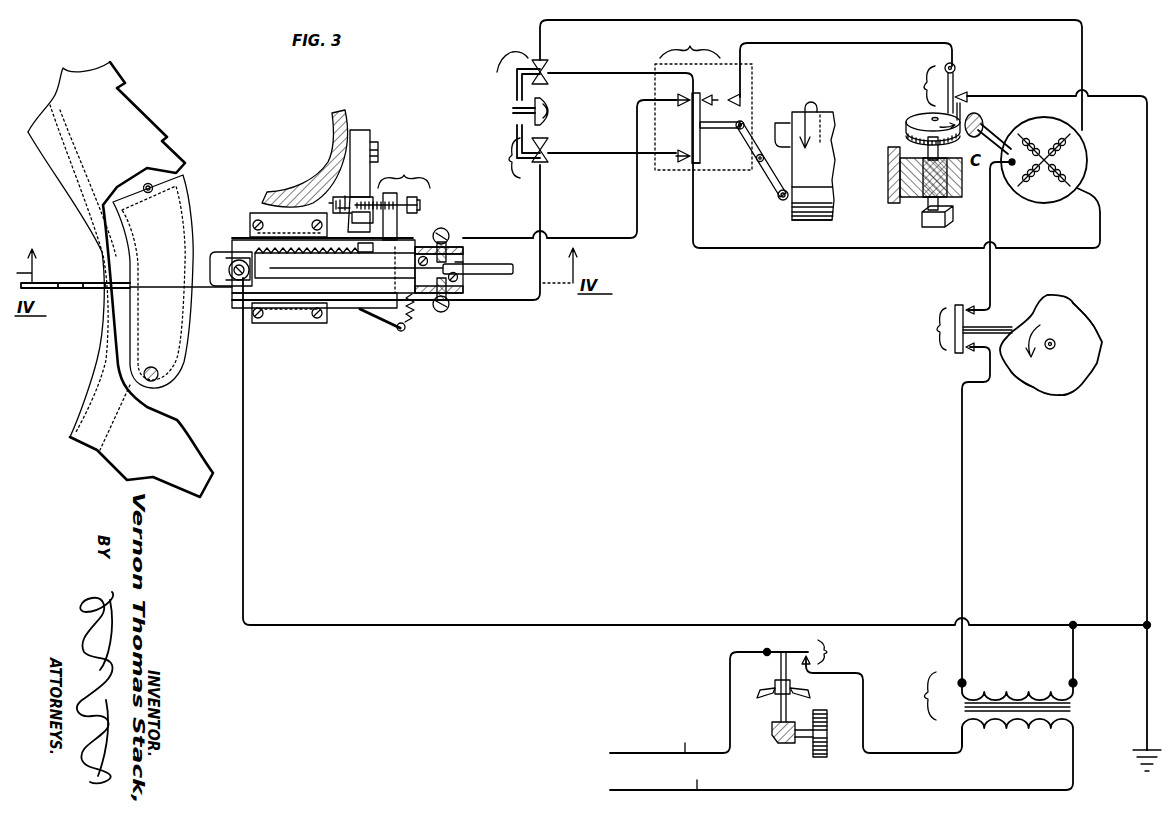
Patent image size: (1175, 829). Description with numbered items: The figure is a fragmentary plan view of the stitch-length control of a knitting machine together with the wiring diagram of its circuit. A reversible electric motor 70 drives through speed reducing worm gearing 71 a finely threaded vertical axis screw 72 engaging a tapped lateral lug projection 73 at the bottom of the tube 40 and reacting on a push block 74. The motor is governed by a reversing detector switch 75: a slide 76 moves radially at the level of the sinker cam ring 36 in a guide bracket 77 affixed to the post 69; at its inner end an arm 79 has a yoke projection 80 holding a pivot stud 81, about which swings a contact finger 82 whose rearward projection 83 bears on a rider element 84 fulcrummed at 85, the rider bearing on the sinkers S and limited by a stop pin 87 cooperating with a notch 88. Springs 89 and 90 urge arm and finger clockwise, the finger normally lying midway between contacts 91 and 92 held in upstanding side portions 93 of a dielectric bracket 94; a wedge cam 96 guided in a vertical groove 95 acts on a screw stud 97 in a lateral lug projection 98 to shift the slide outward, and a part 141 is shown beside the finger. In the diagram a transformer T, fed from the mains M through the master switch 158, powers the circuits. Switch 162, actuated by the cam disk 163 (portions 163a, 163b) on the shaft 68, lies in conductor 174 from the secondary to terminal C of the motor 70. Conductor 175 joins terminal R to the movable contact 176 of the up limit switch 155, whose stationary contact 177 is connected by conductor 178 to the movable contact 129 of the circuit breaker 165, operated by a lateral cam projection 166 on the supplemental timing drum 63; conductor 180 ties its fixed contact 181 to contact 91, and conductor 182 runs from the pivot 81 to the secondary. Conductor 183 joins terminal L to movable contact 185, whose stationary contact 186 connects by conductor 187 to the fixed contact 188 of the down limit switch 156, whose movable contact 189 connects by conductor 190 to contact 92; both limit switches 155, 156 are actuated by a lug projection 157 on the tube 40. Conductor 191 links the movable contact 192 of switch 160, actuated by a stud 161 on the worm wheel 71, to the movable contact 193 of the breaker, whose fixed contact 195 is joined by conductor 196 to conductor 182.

The sinker cam ring 36 is at (112, 470).
The tube 40 is at (887, 153).
The supplemental timing drum 63 is at (818, 220).
The shaft 68 is at (1050, 349).
The post 69 is at (330, 138).
The reversible electric motor 70 is at (1088, 160).
The speed reducing worm gearing 71 is at (908, 121).
The finely threaded vertical axis screw 72 is at (925, 192).
The tapped lateral lug projection 73 is at (905, 158).
The push block 74 is at (948, 224).
The reversing detector switch 75 is at (404, 169).
The slide 76 is at (345, 308).
The guide bracket 77 is at (372, 130).
The arm 79 is at (283, 322).
The yoke projection 80 is at (226, 267).
The pivot stud 81 is at (226, 254).
The contact finger 82 is at (376, 272).
The rearward projection 83 is at (208, 292).
The rider element 84 is at (183, 185).
The fulcrum 85 is at (152, 367).
The stop pin 87 is at (147, 183).
The notch 88 is at (148, 193).
The spring 89 is at (412, 306).
The spring 90 is at (310, 246).
The contact 91 is at (441, 228).
The contact 92 is at (447, 306).
The upstanding side portions 93 is at (420, 249).
The bracket 94 is at (464, 258).
The vertical groove 95 is at (353, 202).
The wedge cam 96 is at (337, 172).
The screw stud 97 is at (418, 205).
The lateral lug projection 98 is at (400, 216).
The contact 129 is at (708, 95).
The rod 141 is at (488, 268).
The safety switch 155 is at (506, 51).
The safety switch 156 is at (492, 158).
The lug projection 157 is at (513, 110).
The master switch 158 is at (809, 698).
The switch 160 is at (913, 86).
The stud 161 is at (980, 118).
The switch 162 is at (957, 329).
The supplemental cam disk 163 is at (1090, 346).
The cam lobe 163a is at (1078, 305).
The cam lobe 163b is at (1028, 388).
The circuit breaker 165 is at (703, 100).
The lateral cam projection 166 is at (784, 123).
The conductor 174 is at (990, 224).
The conductor 175 is at (614, 21).
The movable contact 176 is at (549, 64).
The stationary contact 177 is at (551, 80).
The conductor 178 is at (632, 80).
The conductor 180 is at (585, 238).
The fixed contact 181 is at (686, 106).
The conductor 182 is at (245, 456).
The conductor 183 is at (872, 249).
The movable contact 185 is at (688, 166).
The stationary contact 186 is at (684, 152).
The conductor 187 is at (607, 155).
The fixed contact 188 is at (550, 143).
The movable contact 189 is at (550, 157).
The conductor 190 is at (520, 301).
The conductor 191 is at (870, 44).
The movable contact 192 is at (956, 70).
The movable contact 193 is at (740, 98).
The fixed contact 195 is at (970, 96).
The conductor 196 is at (1060, 96).
The sinkers S is at (67, 282).
The transformer T is at (843, 728).
The main M is at (786, 720).